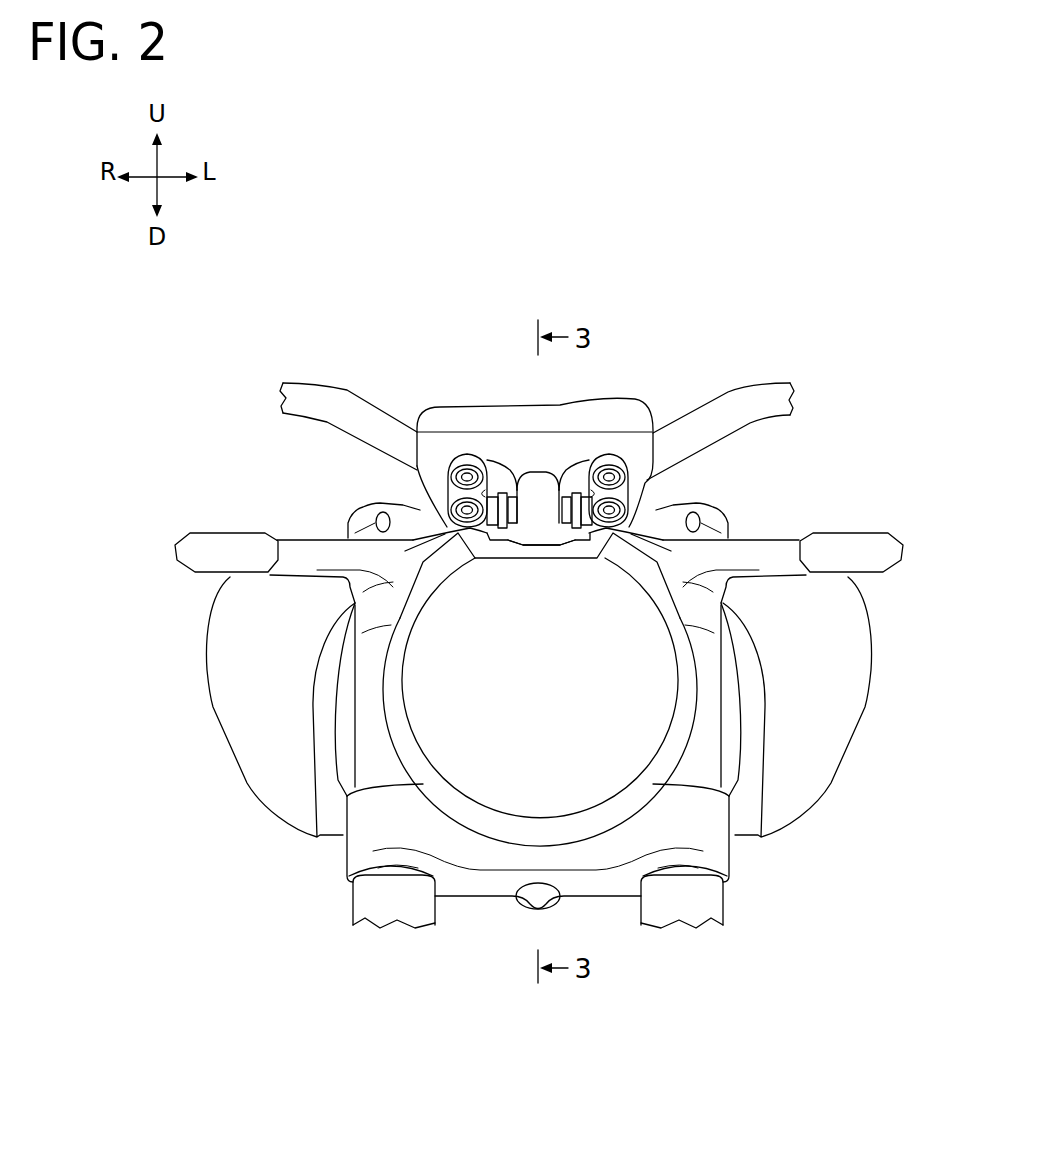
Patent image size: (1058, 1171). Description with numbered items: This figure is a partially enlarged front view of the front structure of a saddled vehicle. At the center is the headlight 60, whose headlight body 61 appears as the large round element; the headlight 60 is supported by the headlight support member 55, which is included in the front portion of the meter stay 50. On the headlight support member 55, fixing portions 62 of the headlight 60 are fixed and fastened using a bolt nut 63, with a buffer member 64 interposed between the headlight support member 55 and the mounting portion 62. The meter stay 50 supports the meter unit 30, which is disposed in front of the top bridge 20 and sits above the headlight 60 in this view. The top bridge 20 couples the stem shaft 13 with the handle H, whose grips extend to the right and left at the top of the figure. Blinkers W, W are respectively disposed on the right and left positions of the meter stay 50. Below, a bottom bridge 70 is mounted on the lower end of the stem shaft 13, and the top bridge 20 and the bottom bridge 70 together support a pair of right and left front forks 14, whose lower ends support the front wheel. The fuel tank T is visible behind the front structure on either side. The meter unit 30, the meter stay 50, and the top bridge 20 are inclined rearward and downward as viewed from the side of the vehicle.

The handle H is at (729, 388).
The meter unit 30 is at (462, 405).
The meter stay 50 is at (410, 473).
The top bridge 20 is at (348, 515).
The blinker W is at (189, 538).
The fuel tank T is at (870, 658).
The headlight body 61 is at (693, 653).
The headlight 60 is at (597, 713).
The bottom bridge 70 is at (735, 858).
The front fork 14 is at (357, 906).
The stem shaft 13 is at (532, 905).
The headlight support member 55 is at (527, 518).
The fixing portion 62 is at (504, 515).
The bolt nut 63 is at (487, 523).
The buffer member 64 is at (563, 515).